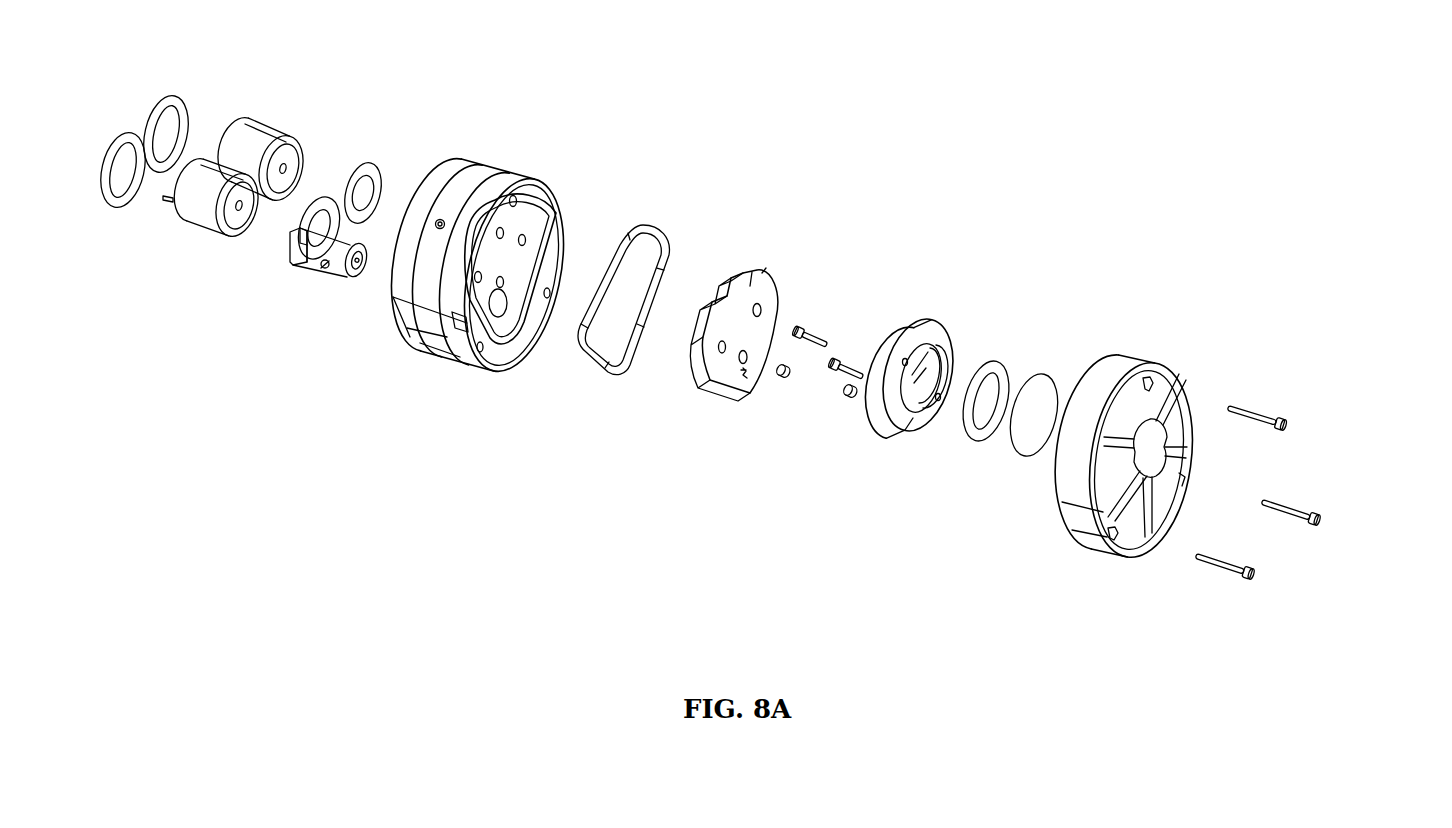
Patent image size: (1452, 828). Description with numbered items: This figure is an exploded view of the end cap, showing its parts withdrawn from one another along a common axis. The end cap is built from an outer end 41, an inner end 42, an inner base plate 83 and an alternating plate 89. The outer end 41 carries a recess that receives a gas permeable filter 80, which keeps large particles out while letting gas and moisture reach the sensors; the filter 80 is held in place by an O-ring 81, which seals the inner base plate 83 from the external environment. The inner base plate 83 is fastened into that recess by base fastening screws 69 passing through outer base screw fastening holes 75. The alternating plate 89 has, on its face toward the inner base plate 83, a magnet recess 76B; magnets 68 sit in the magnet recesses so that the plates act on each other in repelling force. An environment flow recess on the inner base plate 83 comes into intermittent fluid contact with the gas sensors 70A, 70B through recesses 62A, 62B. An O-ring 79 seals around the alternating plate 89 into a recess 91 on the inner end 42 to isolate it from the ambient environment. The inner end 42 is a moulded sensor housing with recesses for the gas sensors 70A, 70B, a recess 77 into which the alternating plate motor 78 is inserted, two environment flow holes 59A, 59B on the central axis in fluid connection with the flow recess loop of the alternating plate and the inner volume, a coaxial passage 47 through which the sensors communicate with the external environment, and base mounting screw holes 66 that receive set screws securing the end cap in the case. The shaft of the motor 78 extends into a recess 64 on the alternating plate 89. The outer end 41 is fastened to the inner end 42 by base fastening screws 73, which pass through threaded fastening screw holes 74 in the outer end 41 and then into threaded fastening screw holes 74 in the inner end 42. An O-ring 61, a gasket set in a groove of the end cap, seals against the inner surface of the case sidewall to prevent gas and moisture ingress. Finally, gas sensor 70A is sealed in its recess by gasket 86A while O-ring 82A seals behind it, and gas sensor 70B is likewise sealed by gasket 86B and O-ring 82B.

The outer end 41 is at (1197, 410).
The inner end 42 is at (756, 365).
The coaxial passage 47 is at (1044, 387).
The environment flow hole 59A is at (502, 210).
The environment flow hole 59B is at (463, 323).
The O-ring 61 is at (475, 178).
The recess 62A is at (523, 235).
The recess 62B is at (463, 292).
The recess 64 is at (743, 365).
The base mounting screw holes 66 is at (440, 221).
The magnets 68 is at (781, 378).
The base fastening screws 69 is at (837, 363).
The gas sensor 70A is at (253, 148).
The gas sensor 70B is at (200, 208).
The base fastening screws 73 is at (1285, 427).
The threaded fastening screw holes 74 is at (513, 193).
The outer base screw fastening holes 75 is at (900, 363).
The magnet recess 76B is at (718, 368).
The recess 77 is at (497, 373).
The alternating plate motor 78 is at (340, 280).
The O-ring 79 is at (653, 227).
The gas permeable filter 80 is at (1050, 373).
The O-ring 81 is at (1008, 365).
The O-ring 82A is at (183, 92).
The O-ring 82B is at (107, 212).
The inner base plate 83 is at (752, 287).
The gasket 86A is at (373, 163).
The gasket 86B is at (307, 265).
The alternating plate 89 is at (765, 272).
The recess 91 is at (553, 197).